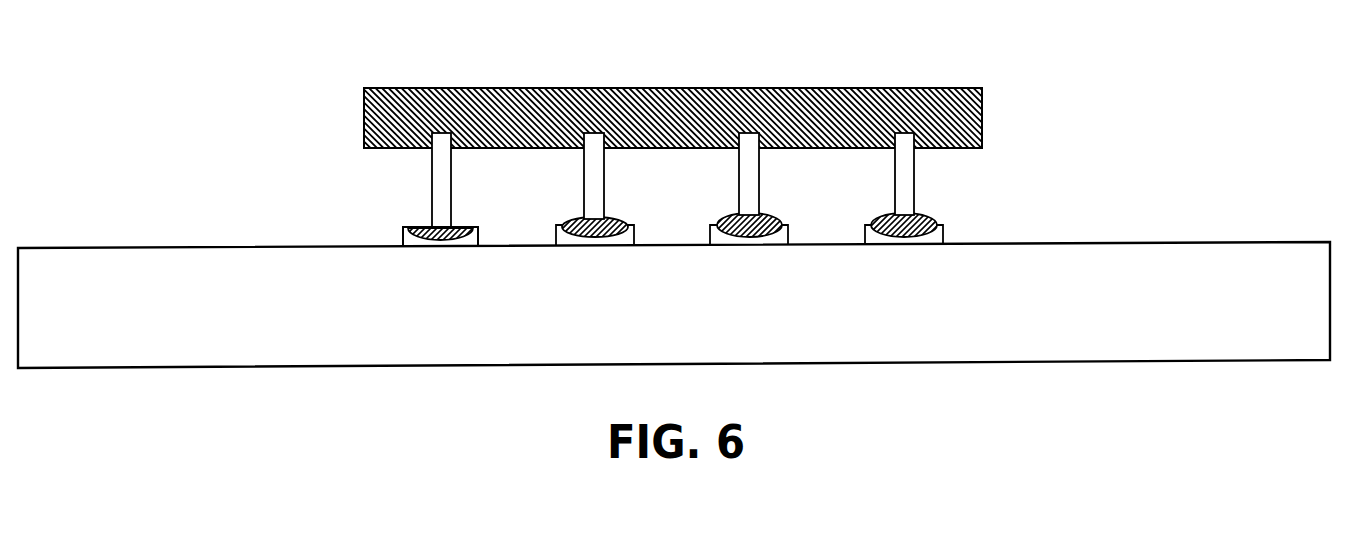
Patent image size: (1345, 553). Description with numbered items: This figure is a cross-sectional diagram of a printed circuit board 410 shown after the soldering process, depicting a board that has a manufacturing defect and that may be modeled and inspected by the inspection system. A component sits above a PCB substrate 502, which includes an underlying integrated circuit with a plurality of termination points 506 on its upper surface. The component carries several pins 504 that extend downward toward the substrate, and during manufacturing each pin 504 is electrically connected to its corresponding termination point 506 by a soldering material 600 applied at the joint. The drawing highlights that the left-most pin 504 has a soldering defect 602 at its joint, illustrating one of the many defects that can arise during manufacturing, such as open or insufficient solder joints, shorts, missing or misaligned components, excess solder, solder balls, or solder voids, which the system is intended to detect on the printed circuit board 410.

The printed circuit board 410 is at (1112, 97).
The PCB substrate 502 is at (1055, 242).
The pin 504 is at (737, 179).
The termination point 506 is at (943, 234).
The soldering material 600 is at (885, 213).
The soldering defect 602 is at (413, 217).